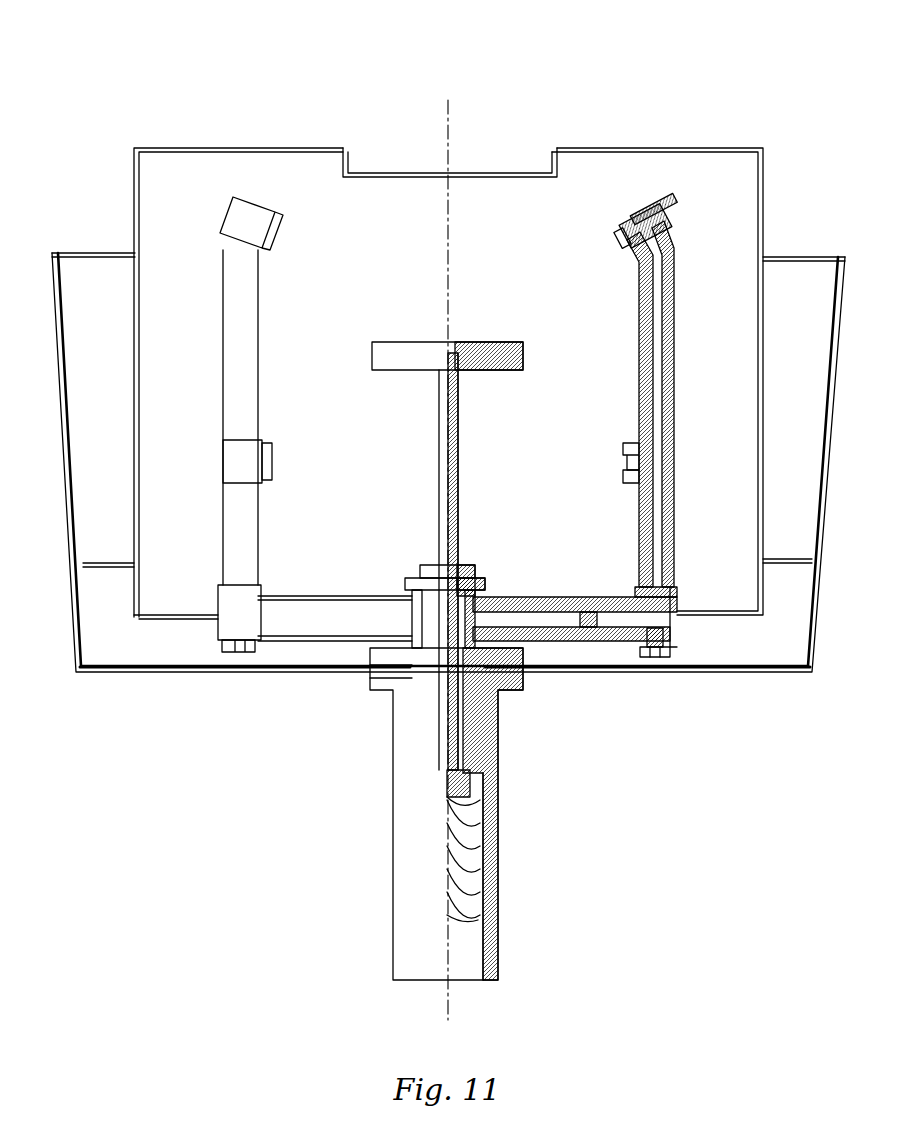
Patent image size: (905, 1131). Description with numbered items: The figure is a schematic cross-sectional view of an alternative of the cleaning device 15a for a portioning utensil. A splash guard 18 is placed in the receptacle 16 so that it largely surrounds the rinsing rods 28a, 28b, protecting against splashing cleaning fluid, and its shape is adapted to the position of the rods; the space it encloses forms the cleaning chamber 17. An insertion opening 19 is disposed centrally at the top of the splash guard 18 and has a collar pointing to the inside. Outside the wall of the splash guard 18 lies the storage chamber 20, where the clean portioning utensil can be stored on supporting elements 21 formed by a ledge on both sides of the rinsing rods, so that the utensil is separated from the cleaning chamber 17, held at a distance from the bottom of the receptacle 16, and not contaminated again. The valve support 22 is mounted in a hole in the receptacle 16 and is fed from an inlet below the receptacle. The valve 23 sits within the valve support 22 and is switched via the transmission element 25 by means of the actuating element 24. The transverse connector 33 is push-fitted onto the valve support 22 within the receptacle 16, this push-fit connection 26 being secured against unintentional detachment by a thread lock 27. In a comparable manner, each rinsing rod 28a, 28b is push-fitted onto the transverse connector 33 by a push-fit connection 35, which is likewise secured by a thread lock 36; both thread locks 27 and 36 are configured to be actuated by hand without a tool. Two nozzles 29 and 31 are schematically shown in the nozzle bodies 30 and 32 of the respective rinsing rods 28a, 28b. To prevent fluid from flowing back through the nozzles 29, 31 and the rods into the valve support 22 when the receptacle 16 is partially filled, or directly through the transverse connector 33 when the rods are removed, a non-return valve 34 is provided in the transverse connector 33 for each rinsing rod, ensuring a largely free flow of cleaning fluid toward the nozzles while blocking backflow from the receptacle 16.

The cleaning device 15a is at (803, 148).
The receptacle 16 is at (247, 672).
The cleaning chamber 17 is at (328, 542).
The splash guard 18 is at (133, 190).
The insertion opening 19 is at (537, 147).
The storage chamber 20 is at (88, 469).
The supporting elements 21 is at (107, 568).
The valve support 22 is at (423, 957).
The valve 23 is at (447, 777).
The actuating element 24 is at (407, 358).
The transmission element 25 is at (442, 523).
The push-fit connection 26 is at (477, 637).
The thread lock 27 is at (485, 587).
The rinsing rod 28a is at (667, 320).
The rinsing rod 28b is at (243, 317).
The nozzle 29 is at (623, 233).
The nozzle body 30 is at (618, 213).
The nozzle 31 is at (628, 473).
The nozzle body 32 is at (633, 487).
The transverse connector 33 is at (316, 620).
The non-return valve 34 is at (580, 613).
The push-fit connection 35 is at (677, 593).
The thread lock 36 is at (660, 650).